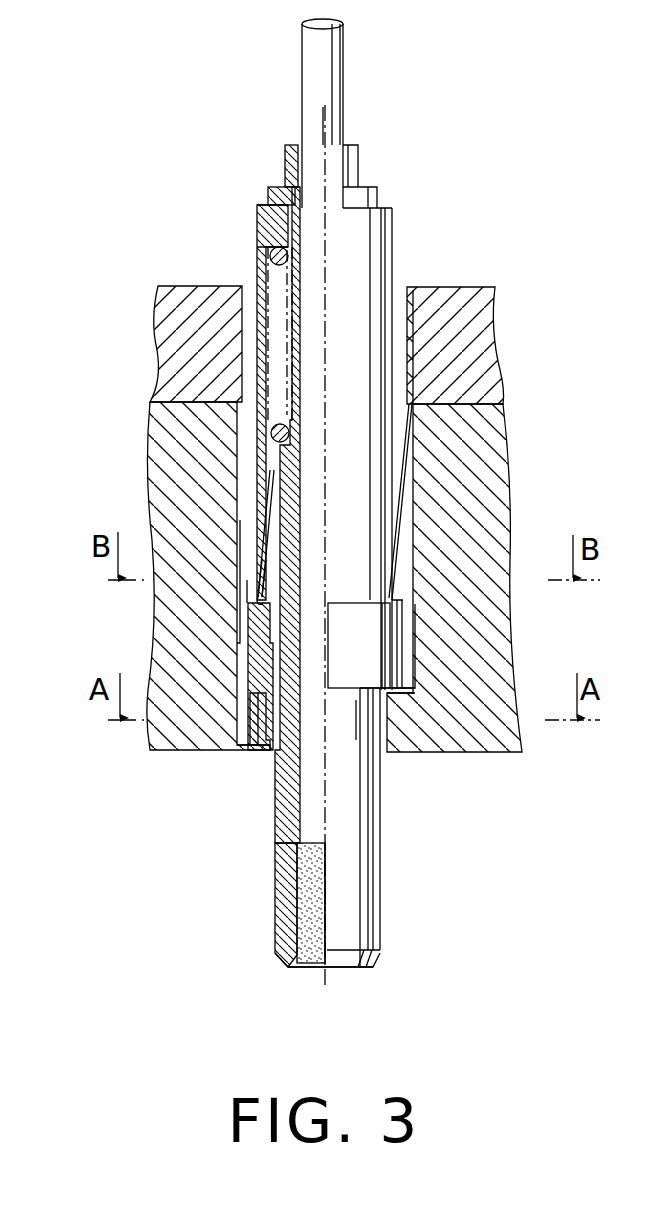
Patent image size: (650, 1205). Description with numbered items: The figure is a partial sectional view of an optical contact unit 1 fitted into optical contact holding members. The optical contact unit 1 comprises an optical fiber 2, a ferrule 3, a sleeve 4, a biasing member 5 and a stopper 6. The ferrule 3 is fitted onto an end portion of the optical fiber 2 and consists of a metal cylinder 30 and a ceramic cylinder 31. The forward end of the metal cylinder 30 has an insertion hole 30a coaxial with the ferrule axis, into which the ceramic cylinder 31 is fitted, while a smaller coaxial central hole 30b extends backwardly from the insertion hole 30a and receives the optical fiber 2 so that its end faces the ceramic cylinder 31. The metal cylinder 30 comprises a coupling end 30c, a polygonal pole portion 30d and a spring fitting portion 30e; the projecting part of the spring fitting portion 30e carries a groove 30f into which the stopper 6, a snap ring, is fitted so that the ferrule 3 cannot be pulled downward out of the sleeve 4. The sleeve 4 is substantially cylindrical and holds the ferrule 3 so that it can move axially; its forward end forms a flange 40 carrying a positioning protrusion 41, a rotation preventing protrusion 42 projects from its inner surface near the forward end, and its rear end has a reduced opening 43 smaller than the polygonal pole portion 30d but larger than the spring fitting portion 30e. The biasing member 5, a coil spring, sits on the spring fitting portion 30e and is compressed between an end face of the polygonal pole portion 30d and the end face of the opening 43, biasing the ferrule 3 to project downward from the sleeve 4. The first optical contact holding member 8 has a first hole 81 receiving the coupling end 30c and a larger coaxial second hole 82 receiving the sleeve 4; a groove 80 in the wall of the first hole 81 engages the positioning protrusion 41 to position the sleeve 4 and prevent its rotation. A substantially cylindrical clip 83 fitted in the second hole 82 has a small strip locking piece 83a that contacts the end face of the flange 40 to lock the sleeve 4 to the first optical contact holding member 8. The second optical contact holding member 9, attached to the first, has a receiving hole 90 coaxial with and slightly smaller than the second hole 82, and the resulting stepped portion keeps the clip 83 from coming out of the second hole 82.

The optical contact unit 1 is at (402, 178).
The optical fiber 2 is at (345, 60).
The ferrule 3 is at (385, 798).
The sleeve 4 is at (393, 236).
The biasing member 5 is at (270, 255).
The stopper 6 is at (268, 192).
The first optical contact holding member 8 is at (138, 658).
The second optical contact holding member 9 is at (182, 286).
The metal cylinder 30 is at (355, 452).
The insertion hole 30a is at (302, 935).
The central hole 30b is at (303, 484).
The coupling end 30c is at (283, 908).
The polygonal pole portion 30d is at (255, 630).
The spring fitting portion 30e is at (302, 328).
The groove 30f is at (280, 187).
The ceramic cylinder 31 is at (318, 962).
The flange 40 is at (350, 611).
The positioning protrusion 41 is at (243, 746).
The rotation preventing protrusion 42 is at (373, 523).
The opening 43 is at (263, 227).
The groove 80 is at (255, 758).
The first hole 81 is at (357, 718).
The second hole 82 is at (418, 653).
The clip 83 is at (258, 495).
The locking piece 83a is at (245, 515).
The receiving hole 90 is at (404, 310).